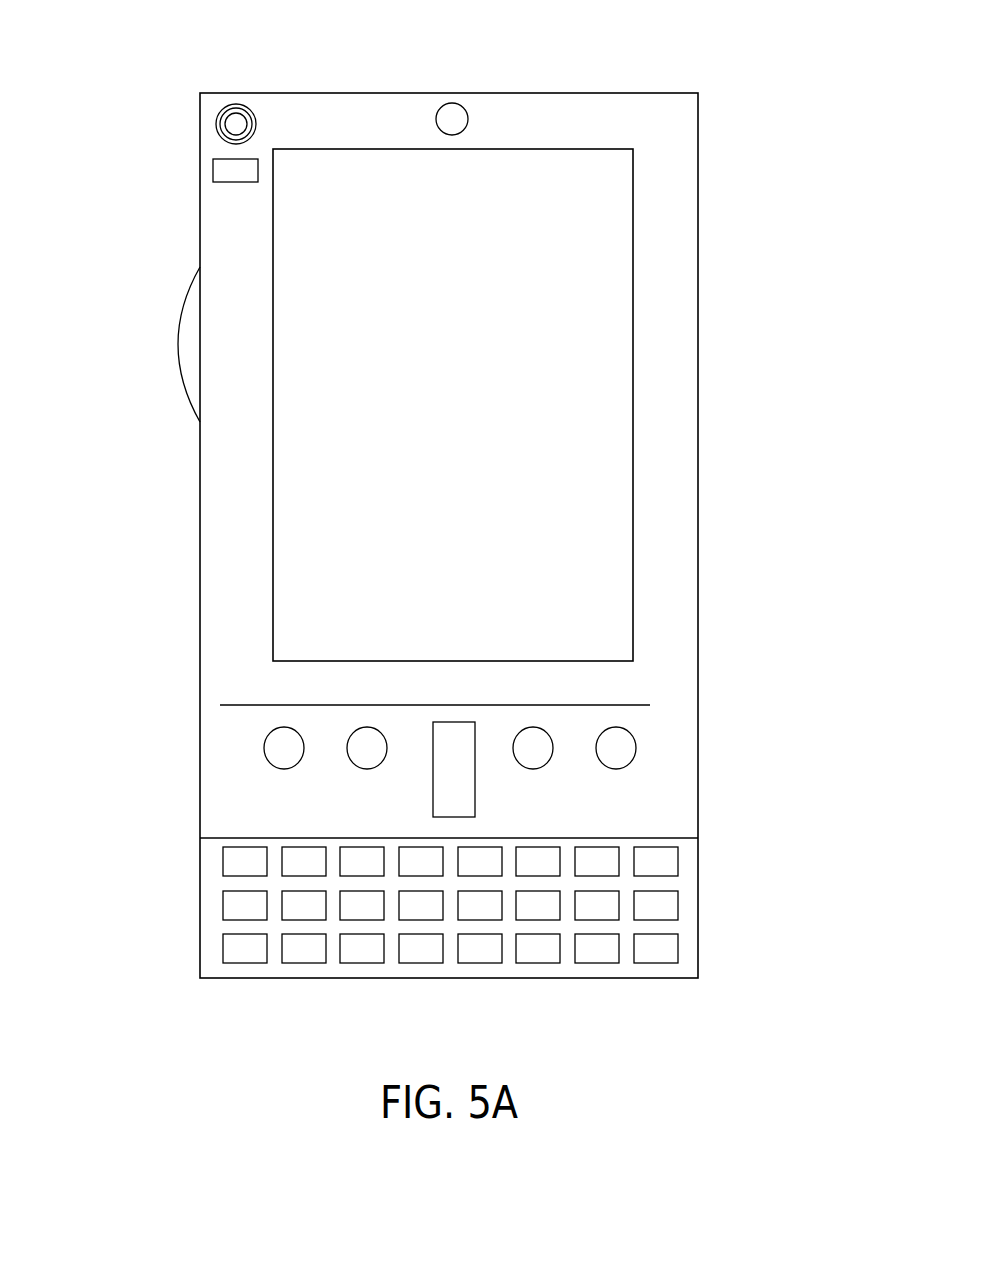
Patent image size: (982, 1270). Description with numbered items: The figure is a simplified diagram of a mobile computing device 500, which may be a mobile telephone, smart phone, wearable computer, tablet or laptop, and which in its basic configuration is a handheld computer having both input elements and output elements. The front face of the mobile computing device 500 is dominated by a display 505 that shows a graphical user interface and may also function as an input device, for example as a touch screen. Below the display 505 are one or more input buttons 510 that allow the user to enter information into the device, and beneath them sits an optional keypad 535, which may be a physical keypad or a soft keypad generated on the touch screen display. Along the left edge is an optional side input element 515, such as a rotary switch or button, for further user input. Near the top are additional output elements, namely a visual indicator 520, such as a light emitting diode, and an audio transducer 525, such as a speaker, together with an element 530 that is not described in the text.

The mobile computing device 500 is at (685, 113).
The display 505 is at (385, 573).
The input buttons 510 is at (452, 775).
The side input element 515 is at (190, 343).
The visual indicator 520 is at (215, 176).
The audio transducer 525 is at (215, 123).
The speaker 530 is at (465, 117).
The keypad 535 is at (208, 955).